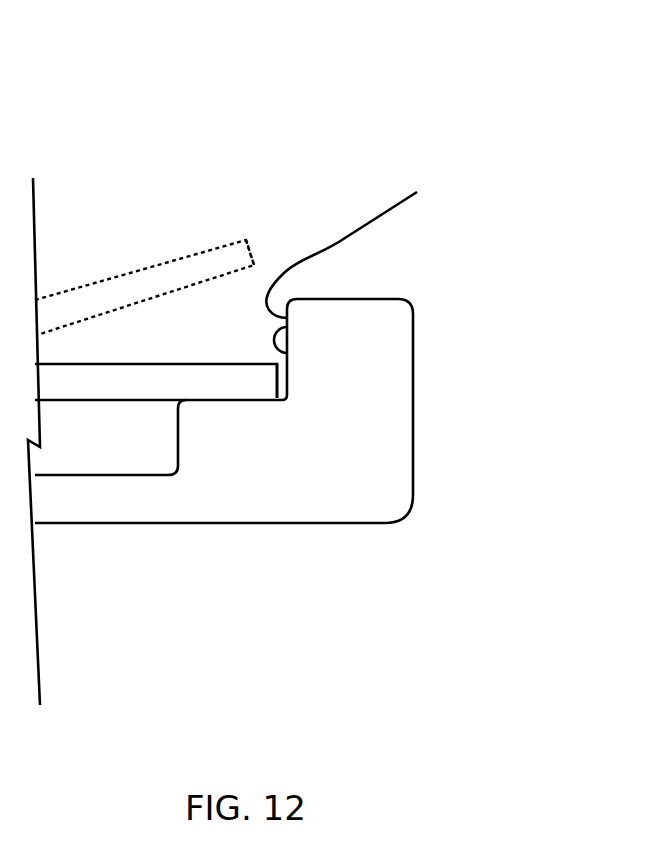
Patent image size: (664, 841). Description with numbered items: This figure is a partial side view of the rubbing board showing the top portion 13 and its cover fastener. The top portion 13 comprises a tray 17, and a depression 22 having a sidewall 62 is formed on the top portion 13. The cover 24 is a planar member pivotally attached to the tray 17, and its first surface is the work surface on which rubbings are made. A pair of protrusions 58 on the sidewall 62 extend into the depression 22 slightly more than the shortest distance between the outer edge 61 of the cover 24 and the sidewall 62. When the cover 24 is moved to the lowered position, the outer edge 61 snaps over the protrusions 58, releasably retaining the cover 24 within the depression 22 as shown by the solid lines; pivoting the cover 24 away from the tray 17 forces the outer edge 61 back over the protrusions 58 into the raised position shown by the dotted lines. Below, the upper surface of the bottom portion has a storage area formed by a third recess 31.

The top portion 13 is at (432, 400).
The tray 17 is at (340, 457).
The depression 22 is at (198, 328).
The cover 24 is at (62, 385).
The third recess 31 is at (110, 437).
The protrusions 58 is at (283, 340).
The outer edge 61 is at (250, 258).
The sidewall 62 is at (368, 242).